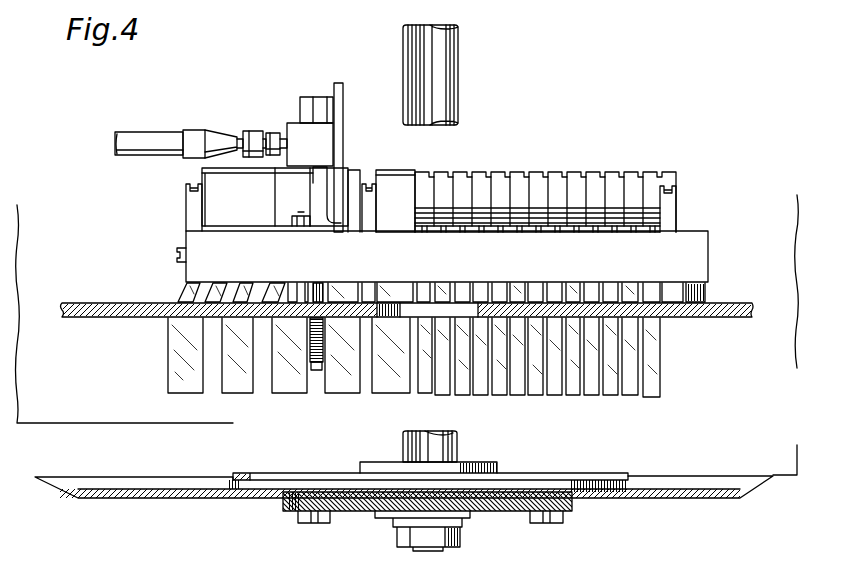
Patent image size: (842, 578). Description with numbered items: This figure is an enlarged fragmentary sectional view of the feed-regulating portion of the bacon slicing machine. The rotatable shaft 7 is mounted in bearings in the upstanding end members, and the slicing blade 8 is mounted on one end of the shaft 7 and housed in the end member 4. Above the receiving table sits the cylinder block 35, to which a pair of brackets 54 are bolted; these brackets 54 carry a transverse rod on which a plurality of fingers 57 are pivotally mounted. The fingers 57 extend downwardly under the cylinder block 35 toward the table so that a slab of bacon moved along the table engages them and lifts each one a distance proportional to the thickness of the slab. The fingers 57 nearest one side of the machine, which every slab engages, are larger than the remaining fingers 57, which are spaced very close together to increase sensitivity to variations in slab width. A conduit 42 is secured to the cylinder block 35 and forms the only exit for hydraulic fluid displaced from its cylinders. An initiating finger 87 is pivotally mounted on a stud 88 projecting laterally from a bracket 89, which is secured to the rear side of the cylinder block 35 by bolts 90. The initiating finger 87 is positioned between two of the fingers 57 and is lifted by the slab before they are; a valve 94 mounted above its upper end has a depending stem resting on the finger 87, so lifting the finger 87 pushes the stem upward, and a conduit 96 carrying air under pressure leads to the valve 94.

The end member 4 is at (97, 317).
The rotatable shaft 7 is at (448, 72).
The slicing blade 8 is at (677, 497).
The cylinder block 35 is at (694, 255).
The conduit 42 is at (175, 251).
The brackets 54 is at (188, 207).
The fingers 57 is at (193, 385).
The initiating finger 87 is at (318, 372).
The stud 88 is at (300, 107).
The bracket 89 is at (343, 152).
The bolts 90 is at (299, 214).
The valve 94 is at (302, 135).
The conduit 96 is at (142, 138).